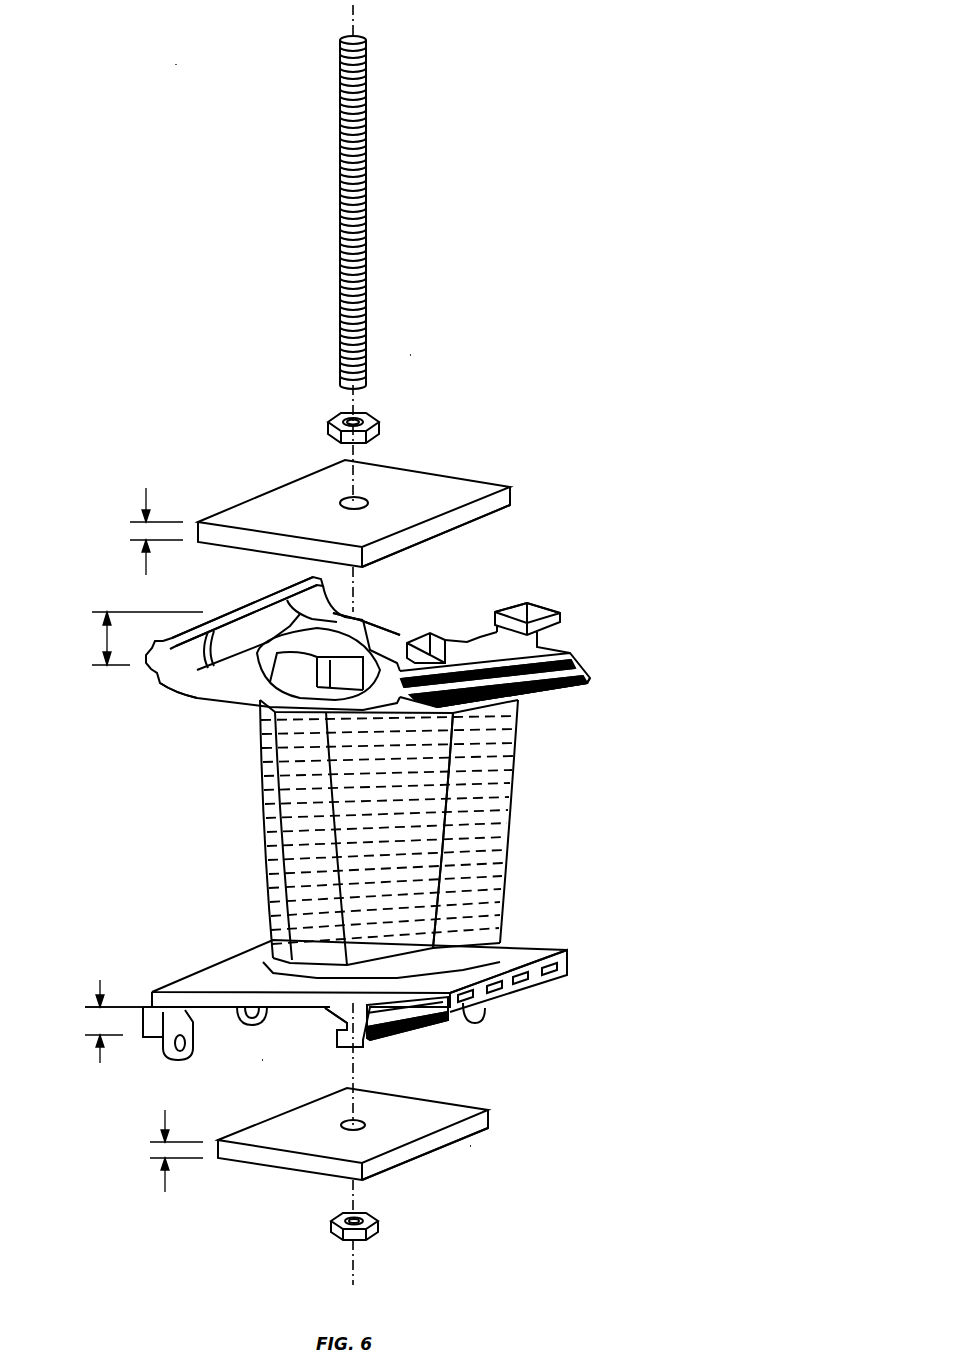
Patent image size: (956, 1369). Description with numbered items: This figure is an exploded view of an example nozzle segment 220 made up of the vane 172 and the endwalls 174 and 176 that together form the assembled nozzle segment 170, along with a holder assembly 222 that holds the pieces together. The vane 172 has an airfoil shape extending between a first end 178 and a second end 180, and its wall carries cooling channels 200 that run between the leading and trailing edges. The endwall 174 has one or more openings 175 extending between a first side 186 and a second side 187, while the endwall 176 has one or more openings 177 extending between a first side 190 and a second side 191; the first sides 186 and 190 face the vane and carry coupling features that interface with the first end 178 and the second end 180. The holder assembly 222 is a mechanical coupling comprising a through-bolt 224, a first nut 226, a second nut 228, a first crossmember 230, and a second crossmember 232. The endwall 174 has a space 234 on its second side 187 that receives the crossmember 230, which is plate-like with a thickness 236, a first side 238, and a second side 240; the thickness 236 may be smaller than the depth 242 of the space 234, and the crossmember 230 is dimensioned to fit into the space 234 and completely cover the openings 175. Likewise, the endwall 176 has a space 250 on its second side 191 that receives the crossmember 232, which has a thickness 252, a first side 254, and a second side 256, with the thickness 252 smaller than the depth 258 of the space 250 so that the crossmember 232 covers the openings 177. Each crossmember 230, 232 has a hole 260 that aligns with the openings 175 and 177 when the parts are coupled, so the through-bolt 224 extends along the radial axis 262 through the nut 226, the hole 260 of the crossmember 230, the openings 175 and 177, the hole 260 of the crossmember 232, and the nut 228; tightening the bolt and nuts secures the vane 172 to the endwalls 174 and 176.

The nozzle segment 170 is at (628, 790).
The vane 172 is at (400, 839).
The endwall 174 is at (367, 642).
The openings 175 is at (345, 632).
The endwall 176 is at (147, 1030).
The openings 177 is at (283, 1008).
The first end 178 is at (522, 700).
The second end 180 is at (512, 947).
The first side 186 is at (208, 703).
The second side 187 is at (548, 660).
The first side 190 is at (316, 994).
The second side 191 is at (236, 1012).
The cooling channels 200 is at (512, 830).
The nozzle segment 220 is at (176, 64).
The holder assembly 222 is at (410, 355).
The through-bolt 224 is at (366, 147).
The first nut 226 is at (330, 426).
The second nut 228 is at (333, 1224).
The first crossmember 230 is at (512, 497).
The second crossmember 232 is at (492, 1115).
The space 234 is at (268, 616).
The thickness 236 is at (146, 492).
The first side 238 is at (432, 534).
The second side 240 is at (372, 789).
The depth 242 is at (107, 640).
The space 250 is at (262, 1060).
The thickness 252 is at (165, 1182).
The first side 254 is at (379, 1138).
The second side 256 is at (405, 1163).
The depth 258 is at (100, 985).
The hole 260 is at (347, 497).
The axis 262 is at (356, 22).